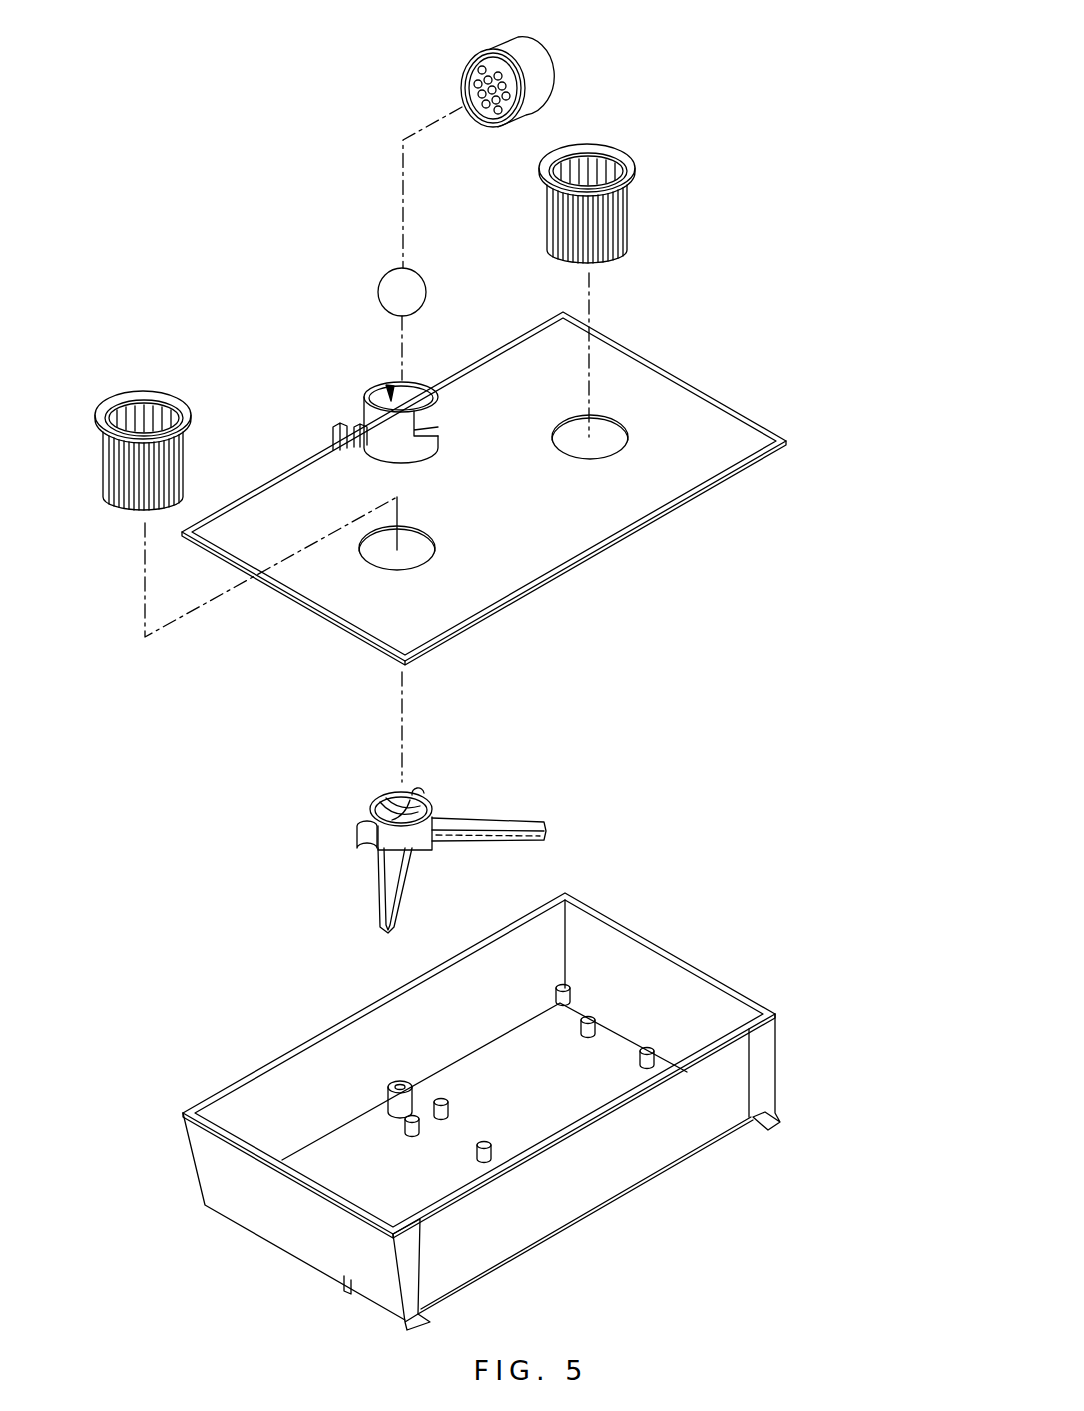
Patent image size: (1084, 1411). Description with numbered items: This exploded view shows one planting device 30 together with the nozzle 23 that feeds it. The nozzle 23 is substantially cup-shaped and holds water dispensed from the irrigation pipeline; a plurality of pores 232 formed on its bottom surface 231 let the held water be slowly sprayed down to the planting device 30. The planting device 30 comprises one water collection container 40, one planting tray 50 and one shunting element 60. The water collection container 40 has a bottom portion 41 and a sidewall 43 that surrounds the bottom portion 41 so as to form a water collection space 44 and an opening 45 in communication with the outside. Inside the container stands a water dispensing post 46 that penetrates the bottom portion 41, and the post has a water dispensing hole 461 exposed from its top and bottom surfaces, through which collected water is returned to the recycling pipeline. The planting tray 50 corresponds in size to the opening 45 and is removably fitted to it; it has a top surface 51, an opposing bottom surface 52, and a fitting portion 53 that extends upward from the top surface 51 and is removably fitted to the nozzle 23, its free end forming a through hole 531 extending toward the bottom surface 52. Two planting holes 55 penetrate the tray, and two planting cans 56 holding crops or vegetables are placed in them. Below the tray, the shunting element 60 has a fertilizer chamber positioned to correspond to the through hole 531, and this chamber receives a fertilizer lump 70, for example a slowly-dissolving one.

The nozzle 23 is at (570, 65).
The bottom surface 231 is at (488, 65).
The pores 232 is at (470, 83).
The fertilizer lump 70 is at (385, 272).
The planting can 56 is at (637, 163).
The planting device 30 is at (872, 335).
The planting tray 50 is at (775, 405).
The top surface 51 is at (670, 425).
The bottom surface 52 is at (642, 528).
The fitting portion 53 is at (367, 386).
The through hole 531 is at (388, 392).
The planting hole 55 is at (608, 415).
The shunting element 60 is at (470, 775).
The water collection container 40 is at (785, 995).
The bottom portion 41 is at (553, 1042).
The sidewall 43 is at (672, 1145).
The water collection space 44 is at (535, 955).
The opening 45 is at (685, 958).
The water dispensing post 46 is at (415, 1100).
The water dispensing hole 461 is at (395, 1085).